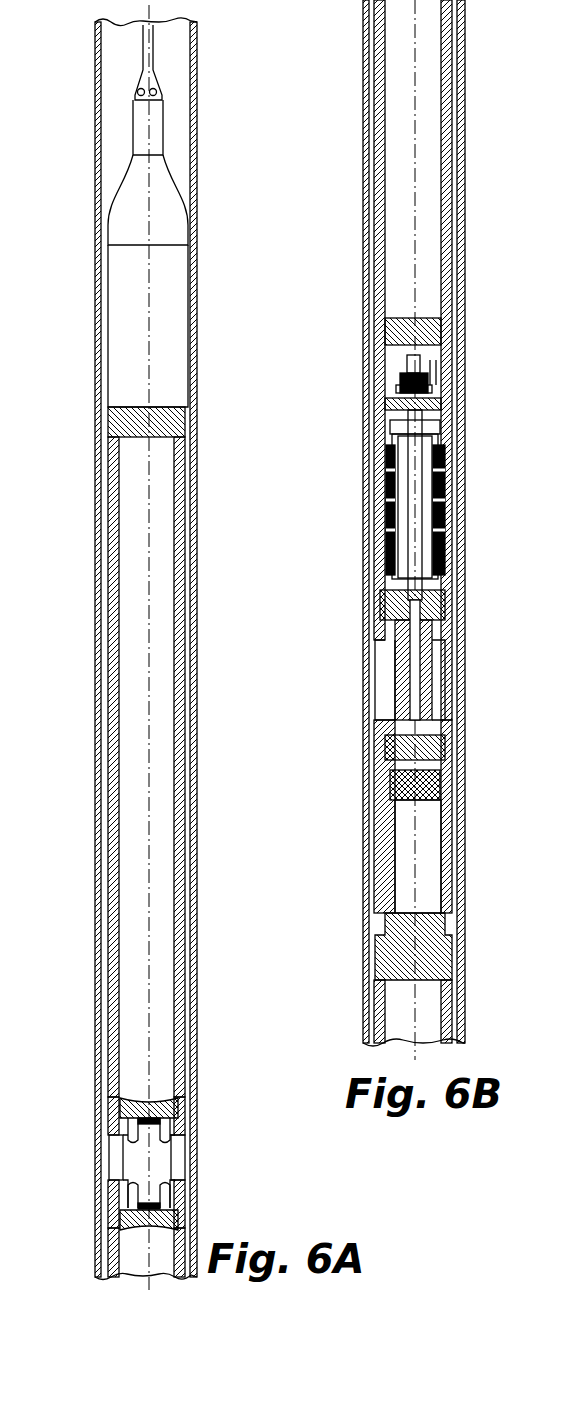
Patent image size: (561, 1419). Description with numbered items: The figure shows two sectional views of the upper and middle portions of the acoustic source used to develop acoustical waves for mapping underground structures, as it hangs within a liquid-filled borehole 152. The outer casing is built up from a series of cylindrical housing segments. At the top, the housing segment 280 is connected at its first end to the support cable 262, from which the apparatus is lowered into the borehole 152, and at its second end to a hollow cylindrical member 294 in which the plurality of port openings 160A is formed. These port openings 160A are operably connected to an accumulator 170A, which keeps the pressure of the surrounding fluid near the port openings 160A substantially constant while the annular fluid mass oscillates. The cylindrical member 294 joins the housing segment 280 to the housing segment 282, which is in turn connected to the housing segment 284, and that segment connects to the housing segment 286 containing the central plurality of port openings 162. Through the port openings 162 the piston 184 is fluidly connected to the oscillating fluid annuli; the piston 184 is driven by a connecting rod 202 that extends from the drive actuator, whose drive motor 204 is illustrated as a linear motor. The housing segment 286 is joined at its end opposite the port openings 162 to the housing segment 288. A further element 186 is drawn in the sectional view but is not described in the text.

In FIG. 6A, the borehole 152 is at (98, 106).
In FIG. 6B, the borehole 152 is at (372, 44).
In FIG. 6A, the support cable 262 is at (143, 41).
In FIG. 6A, the housing segment 280 is at (102, 550).
In FIG. 6A, the accumulator 170A is at (84, 745).
In FIG. 6A, the hollow cylindrical member 294 is at (113, 1118).
In FIG. 6A, the port openings 160A is at (113, 1150).
In FIG. 6A, the housing segment 282 is at (98, 1236).
In FIG. 6B, the housing segment 282 is at (366, 98).
In FIG. 6B, the housing segment 284 is at (369, 476).
In FIG. 6B, the drive motor 204 is at (445, 509).
In FIG. 6B, the connecting rod 202 is at (425, 646).
In FIG. 6B, the port openings 162 is at (375, 672).
In FIG. 6B, the piston 184 is at (440, 746).
In FIG. 6B, the lower seal block 186 is at (424, 805).
In FIG. 6B, the housing segment 286 is at (368, 820).
In FIG. 6B, the housing segment 288 is at (370, 984).